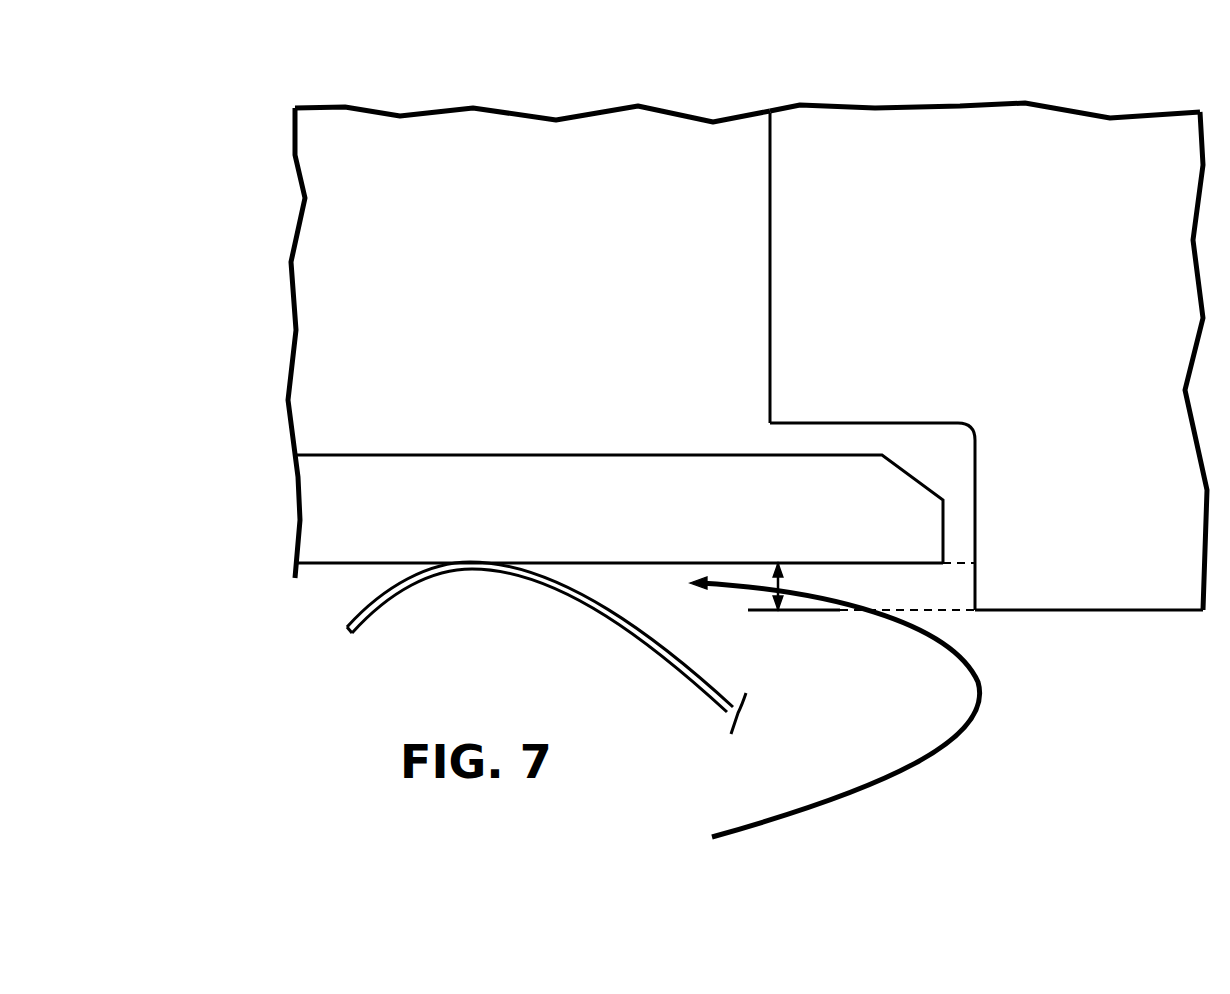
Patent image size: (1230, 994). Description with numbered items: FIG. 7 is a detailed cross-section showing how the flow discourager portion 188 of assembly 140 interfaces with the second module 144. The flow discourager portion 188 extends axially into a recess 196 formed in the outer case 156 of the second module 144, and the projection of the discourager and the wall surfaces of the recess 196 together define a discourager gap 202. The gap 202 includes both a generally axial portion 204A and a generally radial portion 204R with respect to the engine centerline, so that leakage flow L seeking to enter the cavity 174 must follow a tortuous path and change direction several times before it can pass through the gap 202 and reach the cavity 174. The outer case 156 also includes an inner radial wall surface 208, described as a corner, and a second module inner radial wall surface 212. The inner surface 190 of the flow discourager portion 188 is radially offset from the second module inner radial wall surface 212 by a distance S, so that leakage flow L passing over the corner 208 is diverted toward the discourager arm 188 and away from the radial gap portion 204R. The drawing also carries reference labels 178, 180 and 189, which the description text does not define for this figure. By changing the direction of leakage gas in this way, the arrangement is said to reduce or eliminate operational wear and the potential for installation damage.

The assembly 140 is at (540, 92).
The second module 144 is at (1058, 138).
The cavity 174 is at (450, 234).
The outer case 156 is at (1042, 263).
The radial portion 204R is at (862, 422).
The discourager gap 202 is at (952, 450).
The axial portion 204A is at (975, 502).
The inner radial wall surface 208 is at (975, 610).
The second module inner radial wall surface 212 is at (1155, 610).
The flow discourager portion 188 is at (465, 483).
The inner surface 190 is at (325, 565).
The flow direction 178 is at (340, 517).
The recess 196 is at (788, 441).
The seal member 180 is at (595, 675).
The contact surface of seal 189 is at (457, 567).
The distance S is at (773, 591).
The leakage flow L is at (910, 763).